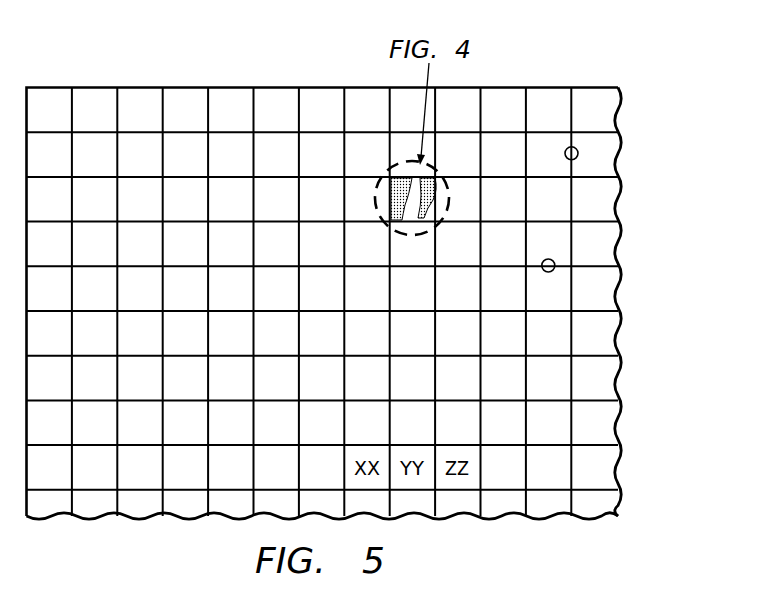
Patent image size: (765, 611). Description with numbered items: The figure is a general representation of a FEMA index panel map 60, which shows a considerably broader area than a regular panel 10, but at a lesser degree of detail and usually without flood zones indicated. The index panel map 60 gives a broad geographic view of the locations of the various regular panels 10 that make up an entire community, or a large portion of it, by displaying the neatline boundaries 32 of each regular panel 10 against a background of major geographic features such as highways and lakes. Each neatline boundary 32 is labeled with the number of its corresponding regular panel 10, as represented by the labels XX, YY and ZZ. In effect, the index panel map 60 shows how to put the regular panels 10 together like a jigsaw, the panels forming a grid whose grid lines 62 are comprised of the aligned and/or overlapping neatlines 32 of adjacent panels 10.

The regular panel 10 is at (234, 110).
The index panel map 60 is at (549, 87).
The grid lines 62 is at (578, 152).
The neatline boundaries 32 is at (630, 201).